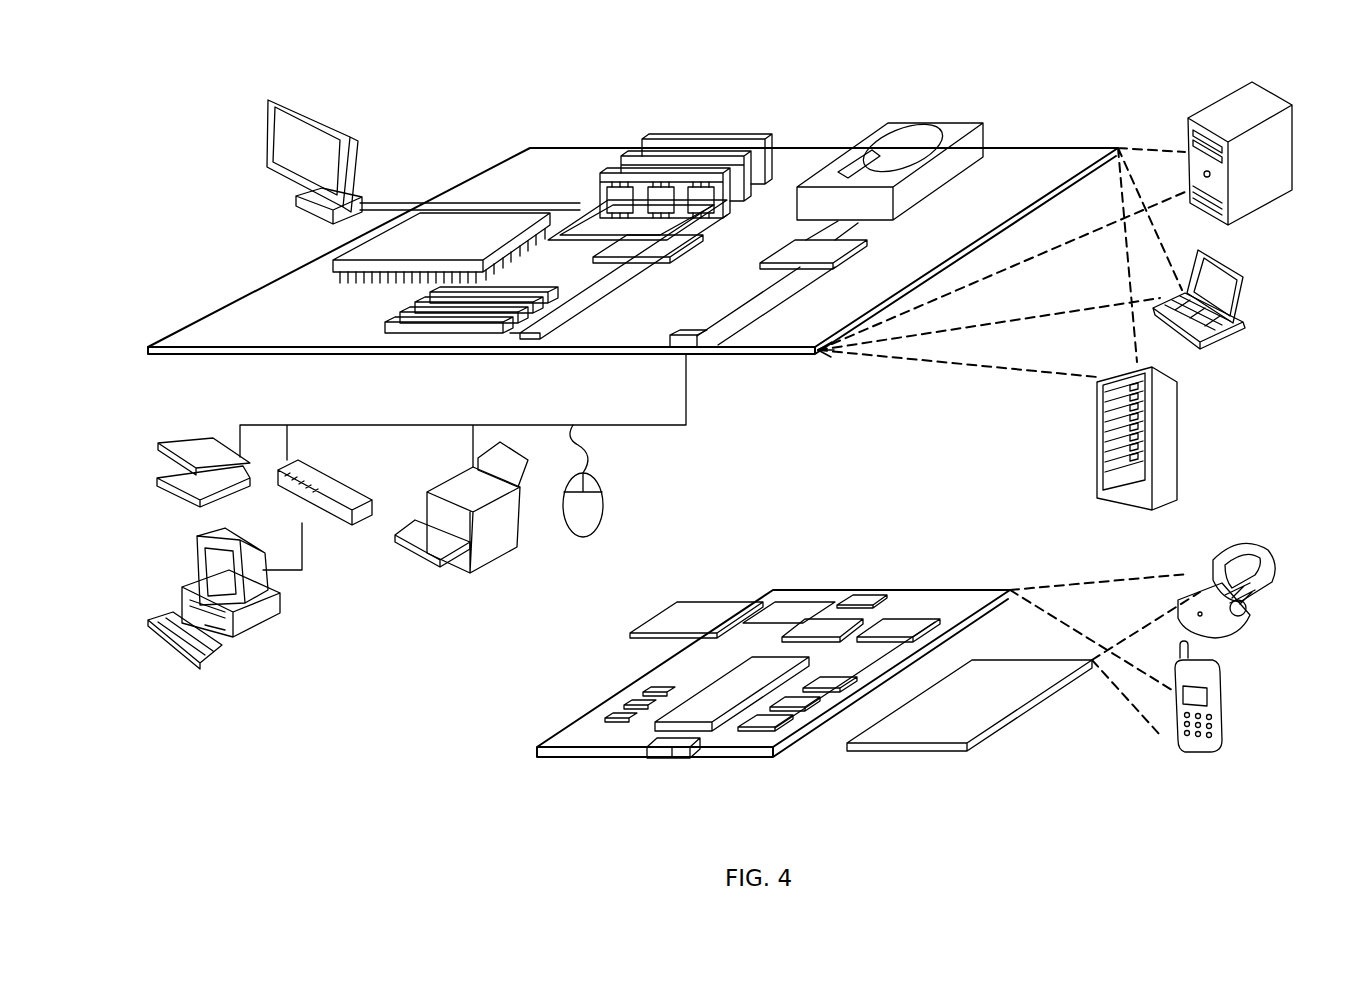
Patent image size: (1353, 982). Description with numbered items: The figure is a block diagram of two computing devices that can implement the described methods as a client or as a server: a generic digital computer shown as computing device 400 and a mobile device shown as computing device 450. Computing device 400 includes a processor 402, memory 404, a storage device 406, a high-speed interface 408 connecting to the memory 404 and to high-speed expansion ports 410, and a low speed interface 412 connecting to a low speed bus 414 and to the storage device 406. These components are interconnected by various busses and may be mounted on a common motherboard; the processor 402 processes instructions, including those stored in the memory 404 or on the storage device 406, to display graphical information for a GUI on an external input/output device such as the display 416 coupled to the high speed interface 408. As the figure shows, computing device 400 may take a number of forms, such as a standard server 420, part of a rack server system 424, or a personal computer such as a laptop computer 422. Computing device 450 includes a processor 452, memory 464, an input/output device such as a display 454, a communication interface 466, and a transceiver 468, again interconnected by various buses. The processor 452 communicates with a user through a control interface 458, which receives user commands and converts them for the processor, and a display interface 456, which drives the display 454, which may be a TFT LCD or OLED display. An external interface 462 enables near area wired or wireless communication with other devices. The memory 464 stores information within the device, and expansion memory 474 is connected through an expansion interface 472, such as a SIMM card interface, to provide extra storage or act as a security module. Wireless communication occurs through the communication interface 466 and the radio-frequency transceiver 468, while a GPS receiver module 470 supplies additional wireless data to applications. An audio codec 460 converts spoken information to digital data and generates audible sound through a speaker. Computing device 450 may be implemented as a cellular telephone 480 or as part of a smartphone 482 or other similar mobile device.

The computing device 400 is at (456, 116).
The processor 402 is at (335, 263).
The memory 404 is at (660, 158).
The storage device 406 is at (873, 128).
The high-speed interface 408 is at (627, 243).
The high-speed expansion ports 410 is at (385, 318).
The low speed interface 412 is at (793, 247).
The low speed bus 414 is at (700, 350).
The display 416 is at (272, 97).
The standard server 420 is at (1186, 133).
The laptop computer 422 is at (1246, 278).
The rack server system 424 is at (1097, 462).
The computing device 450 is at (512, 758).
The processor 452 is at (707, 713).
The display 454 is at (935, 735).
The display interface 456 is at (778, 733).
The control interface 458 is at (820, 710).
The audio codec 460 is at (830, 690).
The external interface 462 is at (673, 748).
The memory 464 is at (628, 708).
The communication interface 466 is at (823, 626).
The transceiver 468 is at (897, 625).
The GPS receiver module 470 is at (868, 600).
The expansion interface 472 is at (752, 600).
The expansion memory 474 is at (678, 604).
The cellular telephone 480 is at (1233, 550).
The smartphone 482 is at (1175, 705).